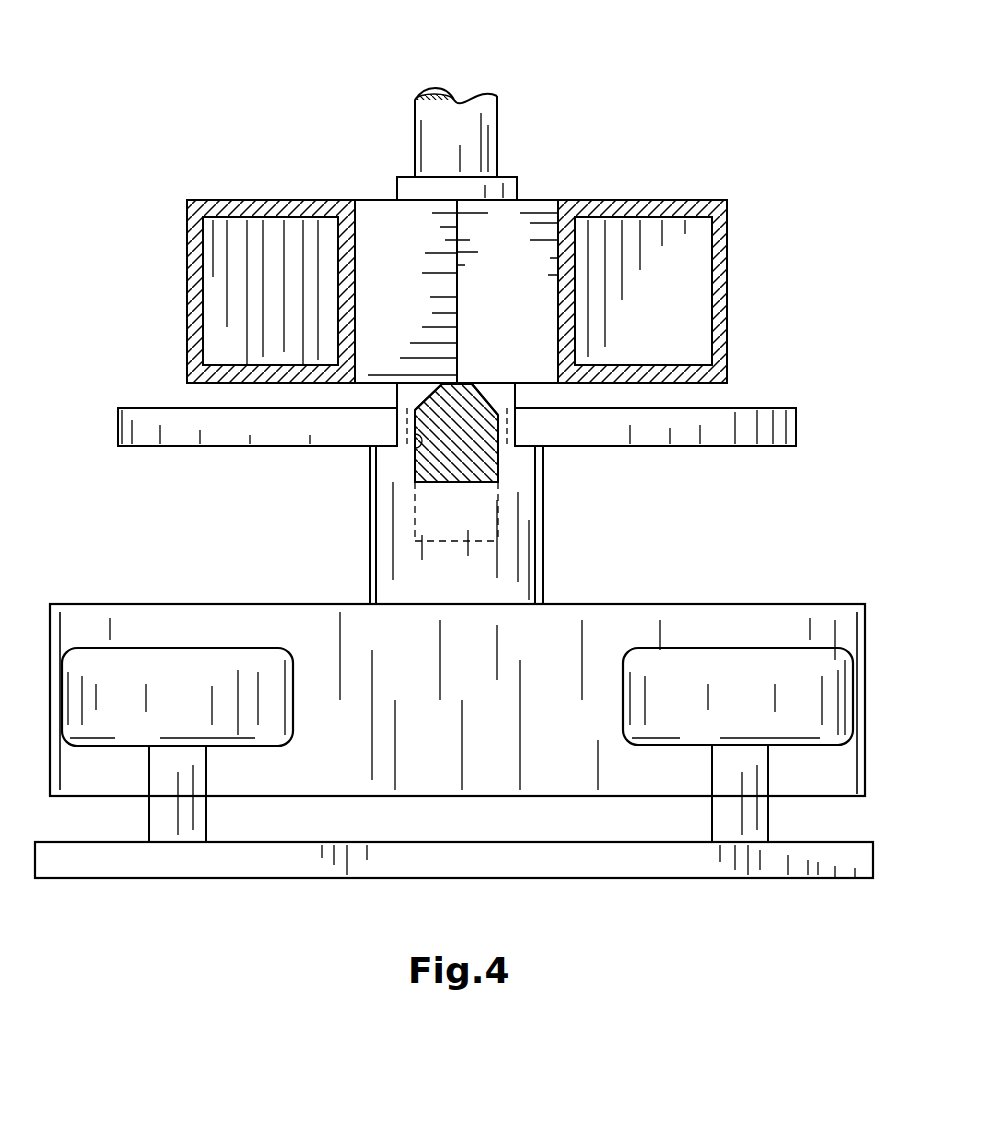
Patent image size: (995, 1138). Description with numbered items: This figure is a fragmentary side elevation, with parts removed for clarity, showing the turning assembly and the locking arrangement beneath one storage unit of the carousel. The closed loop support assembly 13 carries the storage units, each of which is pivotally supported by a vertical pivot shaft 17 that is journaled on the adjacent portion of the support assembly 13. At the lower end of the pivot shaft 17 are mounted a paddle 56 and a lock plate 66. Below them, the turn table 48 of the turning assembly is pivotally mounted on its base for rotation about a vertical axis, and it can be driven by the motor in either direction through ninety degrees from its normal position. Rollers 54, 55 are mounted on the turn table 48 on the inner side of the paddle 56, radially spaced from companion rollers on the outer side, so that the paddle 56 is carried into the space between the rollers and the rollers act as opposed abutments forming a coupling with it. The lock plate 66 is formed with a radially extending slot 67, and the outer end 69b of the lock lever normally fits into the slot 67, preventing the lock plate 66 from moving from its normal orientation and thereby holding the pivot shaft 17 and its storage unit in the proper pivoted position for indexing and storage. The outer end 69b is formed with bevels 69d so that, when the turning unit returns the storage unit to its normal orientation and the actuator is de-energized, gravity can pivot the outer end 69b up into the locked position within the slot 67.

The support assembly 13 is at (632, 205).
The pivot shaft 17 is at (430, 143).
The turn table 48 is at (770, 868).
The roller 54 is at (188, 683).
The roller 55 is at (740, 673).
The paddle 56 is at (598, 632).
The lock plate 66 is at (151, 422).
The slot 67 is at (416, 455).
The outer end 69b is at (498, 446).
The bevels 69d is at (440, 388).